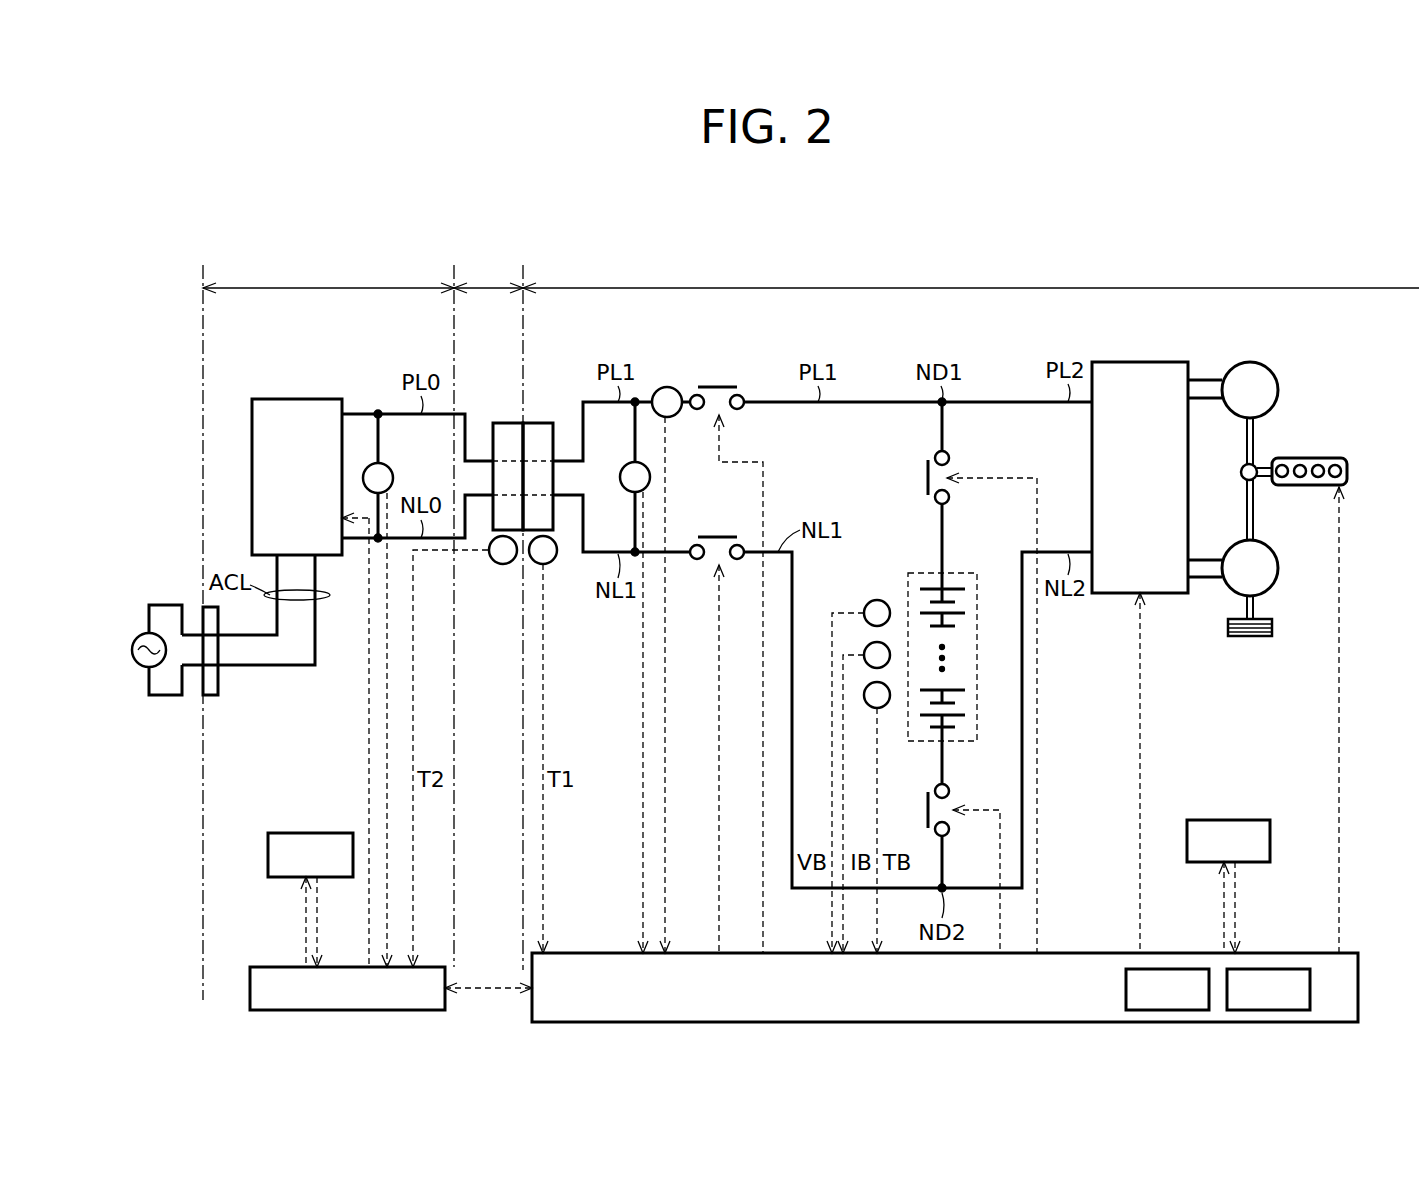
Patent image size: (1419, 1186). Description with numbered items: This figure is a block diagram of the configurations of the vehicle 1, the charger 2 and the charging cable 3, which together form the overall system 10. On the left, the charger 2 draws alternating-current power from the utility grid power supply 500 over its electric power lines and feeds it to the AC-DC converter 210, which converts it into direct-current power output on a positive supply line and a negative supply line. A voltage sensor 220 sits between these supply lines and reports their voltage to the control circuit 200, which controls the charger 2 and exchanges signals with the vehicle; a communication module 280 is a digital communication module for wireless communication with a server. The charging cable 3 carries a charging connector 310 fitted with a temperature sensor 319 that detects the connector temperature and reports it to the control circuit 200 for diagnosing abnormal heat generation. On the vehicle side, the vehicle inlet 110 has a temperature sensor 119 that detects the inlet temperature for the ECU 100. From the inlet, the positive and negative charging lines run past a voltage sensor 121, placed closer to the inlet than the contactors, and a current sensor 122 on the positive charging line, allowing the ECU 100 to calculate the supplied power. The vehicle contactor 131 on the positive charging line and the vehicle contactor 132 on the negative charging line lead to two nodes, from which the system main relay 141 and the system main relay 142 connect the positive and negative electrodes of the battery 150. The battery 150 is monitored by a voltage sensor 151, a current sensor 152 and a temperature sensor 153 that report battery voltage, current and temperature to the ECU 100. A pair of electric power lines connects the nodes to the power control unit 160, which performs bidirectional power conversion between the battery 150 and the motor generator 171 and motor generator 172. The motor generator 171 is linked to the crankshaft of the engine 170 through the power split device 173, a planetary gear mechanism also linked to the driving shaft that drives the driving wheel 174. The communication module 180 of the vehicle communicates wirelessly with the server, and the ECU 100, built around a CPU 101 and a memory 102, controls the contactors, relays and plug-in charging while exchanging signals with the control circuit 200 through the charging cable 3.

The vehicle 1 is at (971, 274).
The charger 2 is at (328, 274).
The charging cable 3 is at (488, 274).
The power supply system 10 is at (1002, 252).
The electronic control unit 100 is at (1065, 953).
The CPU 101 is at (1178, 969).
The memory 102 is at (1280, 969).
The vehicle inlet 110 is at (543, 423).
The temperature sensor 119 is at (556, 563).
The voltage sensor 121 is at (621, 469).
The current sensor 122 is at (666, 386).
The vehicle contactor 131 is at (718, 386).
The vehicle contactor 132 is at (718, 536).
The system main relay 141 is at (922, 474).
The system main relay 142 is at (952, 826).
The battery 150 is at (915, 573).
The voltage sensor 151 is at (873, 600).
The current sensor 152 is at (866, 647).
The temperature sensor 153 is at (866, 704).
The power control unit 160 is at (1140, 362).
The engine 170 is at (1328, 457).
The motor generator 171 is at (1280, 392).
The motor generator 172 is at (1280, 571).
The power split device 173 is at (1256, 464).
The driving wheel 174 is at (1266, 619).
The communication module 180 is at (1240, 820).
The control circuit 200 is at (278, 967).
The AC-DC converter 210 is at (288, 399).
The voltage sensor 220 is at (365, 465).
The communication module 280 is at (326, 833).
The charging connector 310 is at (505, 423).
The temperature sensor 319 is at (490, 560).
The utility grid power supply 500 is at (147, 667).